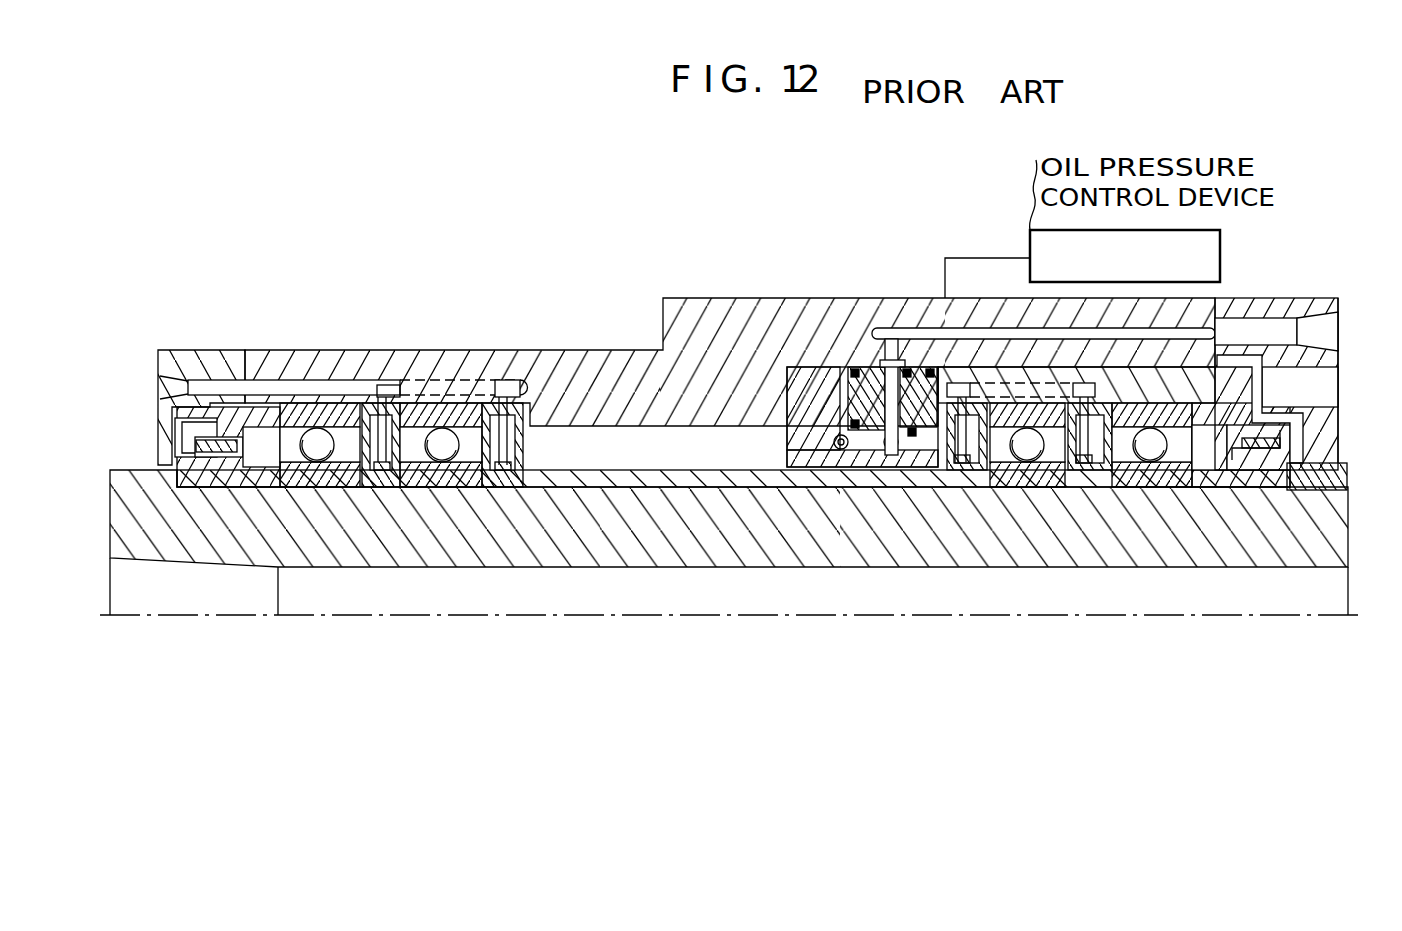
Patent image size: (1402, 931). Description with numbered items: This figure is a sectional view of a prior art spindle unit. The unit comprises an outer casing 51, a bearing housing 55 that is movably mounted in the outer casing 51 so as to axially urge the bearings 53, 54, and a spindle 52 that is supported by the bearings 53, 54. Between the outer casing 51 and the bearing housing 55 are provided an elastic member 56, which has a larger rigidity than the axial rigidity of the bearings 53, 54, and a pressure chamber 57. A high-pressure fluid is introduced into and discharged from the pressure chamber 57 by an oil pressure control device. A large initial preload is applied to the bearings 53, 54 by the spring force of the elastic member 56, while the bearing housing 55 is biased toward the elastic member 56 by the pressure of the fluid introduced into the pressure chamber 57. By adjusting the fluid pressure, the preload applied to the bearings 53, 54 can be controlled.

The outer casing 51 is at (697, 298).
The spindle 52 is at (628, 557).
The bearing 53 is at (1047, 475).
The bearing 54 is at (1168, 470).
The bearing housing 55 is at (933, 380).
The elastic member 56 is at (802, 390).
The pressure chamber 57 is at (828, 373).